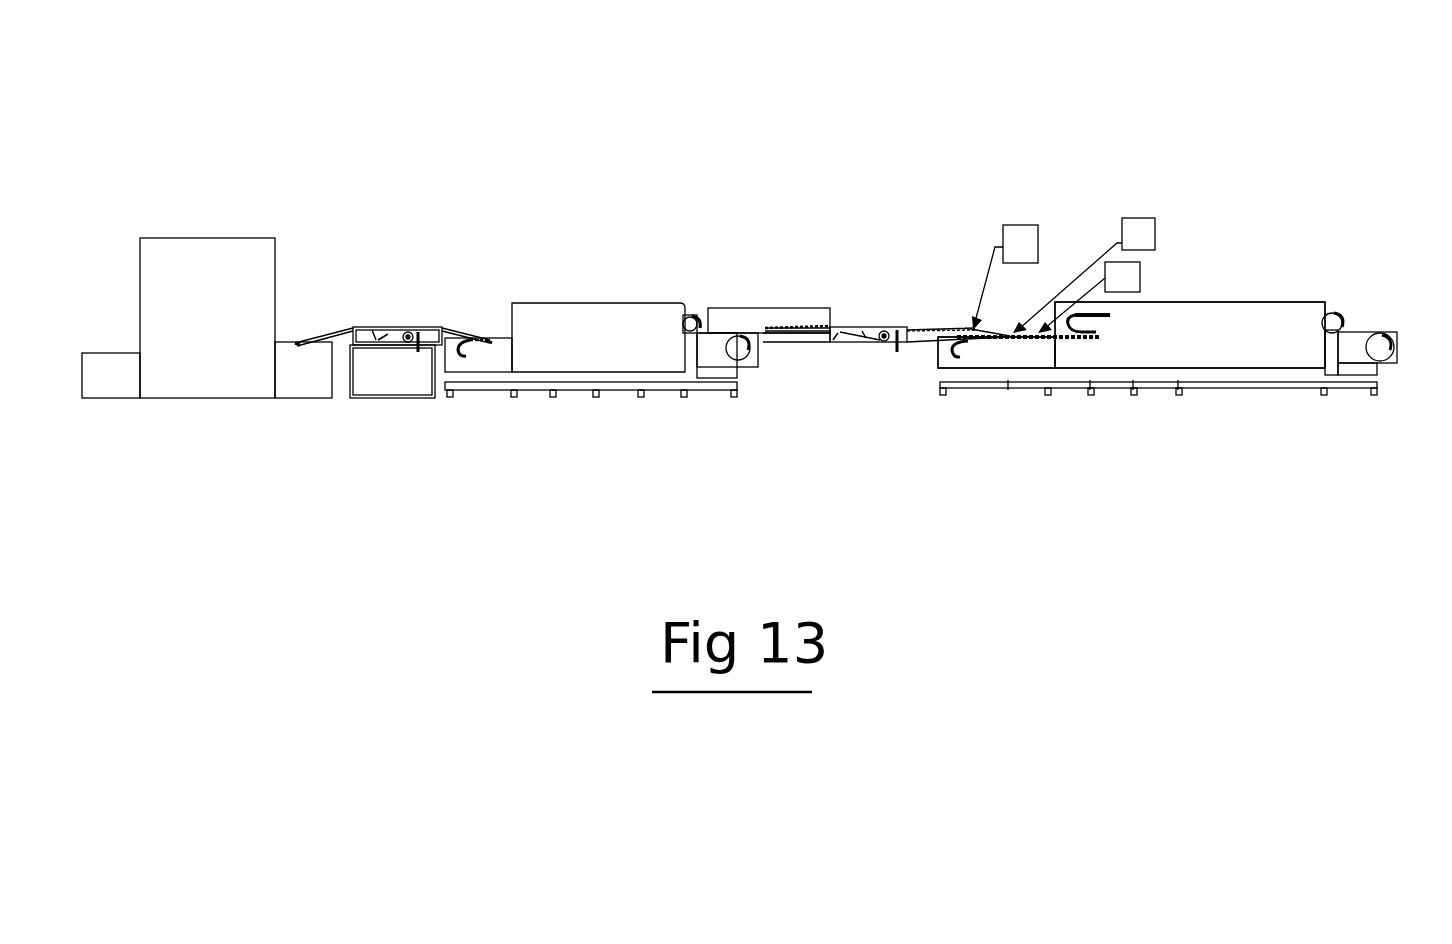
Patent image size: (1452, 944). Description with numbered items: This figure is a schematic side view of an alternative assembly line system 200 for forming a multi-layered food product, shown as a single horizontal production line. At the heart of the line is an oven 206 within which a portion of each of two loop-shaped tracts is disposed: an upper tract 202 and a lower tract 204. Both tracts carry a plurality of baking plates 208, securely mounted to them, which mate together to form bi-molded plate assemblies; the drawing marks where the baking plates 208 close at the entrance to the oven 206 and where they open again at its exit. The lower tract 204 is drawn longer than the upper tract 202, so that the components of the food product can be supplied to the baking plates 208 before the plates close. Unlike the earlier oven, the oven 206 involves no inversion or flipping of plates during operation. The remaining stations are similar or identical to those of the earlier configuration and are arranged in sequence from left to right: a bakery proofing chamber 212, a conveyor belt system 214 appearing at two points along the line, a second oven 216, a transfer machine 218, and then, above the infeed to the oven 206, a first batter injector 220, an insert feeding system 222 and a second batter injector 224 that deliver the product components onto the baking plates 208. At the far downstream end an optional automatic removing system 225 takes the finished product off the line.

The assembly line system 200 is at (758, 93).
The upper loop-shaped tract 202 is at (1142, 319).
The lower loop-shaped tract 204 is at (949, 357).
The oven 206 is at (1267, 299).
The baking plates 208 is at (1322, 333).
The bakery proofing chamber 212 is at (210, 236).
The conveyor belt system 214 is at (395, 319).
The second oven 216 is at (599, 286).
The transfer machine 218 is at (778, 292).
The first batter injector 220 is at (1020, 220).
The insert feeding system 222 is at (1138, 213).
The second batter injector 224 is at (1146, 271).
The automatic removing system 225 is at (1392, 332).